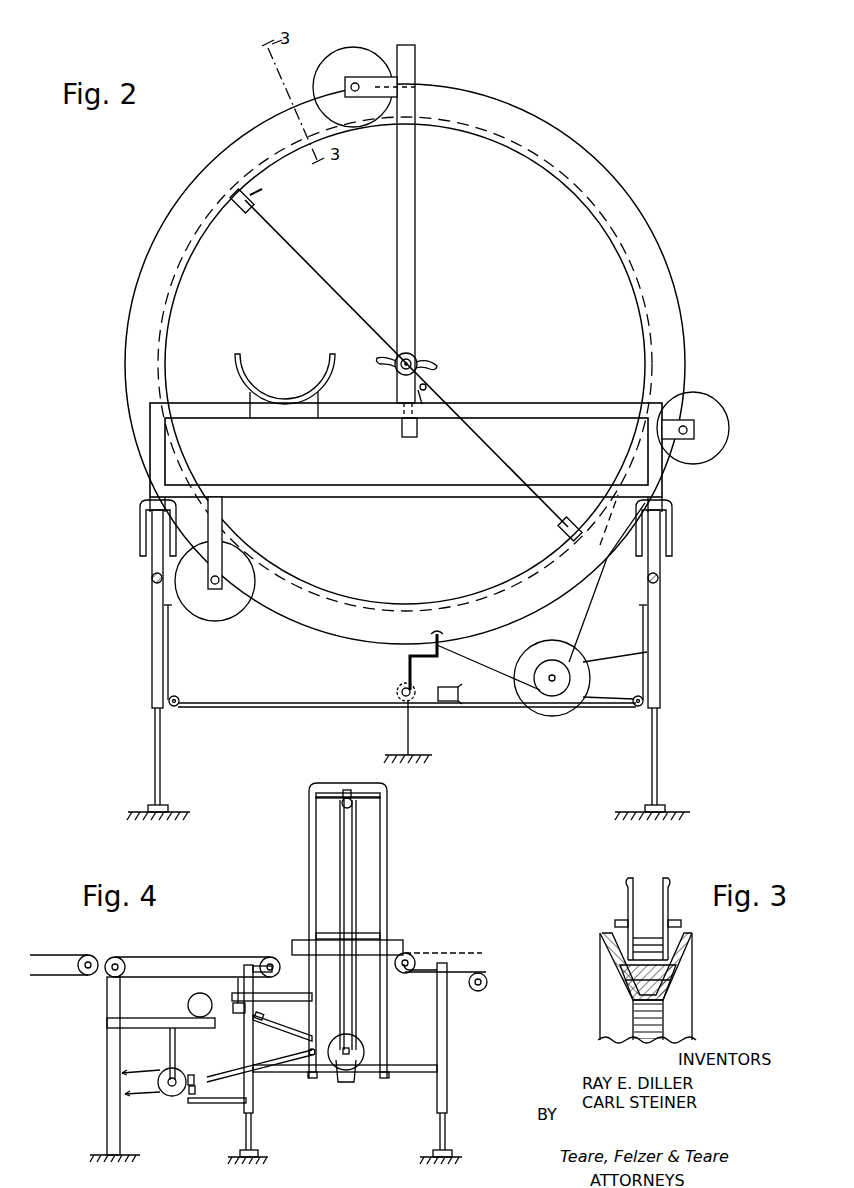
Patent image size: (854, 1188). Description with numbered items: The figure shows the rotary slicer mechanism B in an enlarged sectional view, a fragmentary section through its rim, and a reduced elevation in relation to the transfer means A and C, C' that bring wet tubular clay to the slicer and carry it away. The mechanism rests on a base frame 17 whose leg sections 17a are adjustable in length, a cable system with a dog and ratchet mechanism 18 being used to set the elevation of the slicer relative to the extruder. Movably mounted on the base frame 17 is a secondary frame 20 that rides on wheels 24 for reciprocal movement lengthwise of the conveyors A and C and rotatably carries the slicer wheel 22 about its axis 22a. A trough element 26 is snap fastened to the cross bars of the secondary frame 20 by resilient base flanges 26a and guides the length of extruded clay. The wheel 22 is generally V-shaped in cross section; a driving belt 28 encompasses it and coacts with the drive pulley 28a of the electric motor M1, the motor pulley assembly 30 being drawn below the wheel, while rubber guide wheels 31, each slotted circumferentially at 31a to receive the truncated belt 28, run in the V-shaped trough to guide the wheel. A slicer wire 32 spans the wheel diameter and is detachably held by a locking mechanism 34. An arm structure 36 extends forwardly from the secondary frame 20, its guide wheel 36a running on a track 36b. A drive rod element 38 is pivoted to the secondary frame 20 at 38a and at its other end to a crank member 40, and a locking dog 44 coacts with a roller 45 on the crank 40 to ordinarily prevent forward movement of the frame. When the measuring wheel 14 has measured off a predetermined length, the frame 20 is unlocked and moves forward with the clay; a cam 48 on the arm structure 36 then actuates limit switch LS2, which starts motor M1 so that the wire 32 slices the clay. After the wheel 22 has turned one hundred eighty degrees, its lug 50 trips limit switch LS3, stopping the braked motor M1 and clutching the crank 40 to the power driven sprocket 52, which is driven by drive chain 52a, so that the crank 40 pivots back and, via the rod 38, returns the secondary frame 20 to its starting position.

In FIG. 4, the measuring wheel 14 is at (488, 981).
In FIG. 2, the base frame 17 is at (152, 640).
In FIG. 4, the base frame 17 is at (448, 1072).
In FIG. 2, the leg section 17a is at (160, 772).
In FIG. 4, the leg section 17a is at (246, 1125).
In FIG. 2, the dog and ratchet mechanism 18 is at (400, 690).
In FIG. 2, the secondary frame 20 is at (228, 420).
In FIG. 4, the secondary frame 20 is at (388, 1034).
In FIG. 2, the slicer wheel 22 is at (566, 142).
In FIG. 3, the slicer wheel 22 is at (693, 1012).
In FIG. 2, the axis 22a is at (398, 370).
In FIG. 4, the axis 22a is at (370, 935).
In FIG. 2, the wheels 24 is at (152, 577).
In FIG. 4, the wheels 24 is at (340, 1062).
In FIG. 2, the trough element 26 is at (238, 380).
In FIG. 4, the trough element 26 is at (396, 940).
In FIG. 2, the resilient base flanges 26a is at (298, 410).
In FIG. 2, the driving belt 28 is at (480, 672).
In FIG. 3, the driving belt 28 is at (665, 980).
In FIG. 2, the drive pulley 28a is at (546, 690).
In FIG. 2, the motor pulley 30 is at (560, 712).
In FIG. 2, the guide wheels 31 is at (362, 52).
In FIG. 3, the guide wheels 31 is at (670, 900).
In FIG. 4, the guide wheels 31 is at (350, 1003).
In FIG. 3, the circumferential slot 31a is at (630, 884).
In FIG. 2, the slicer wire 32 is at (487, 452).
In FIG. 2, the locking mechanism 34 is at (212, 188).
In FIG. 4, the arm structure 36 is at (280, 993).
In FIG. 4, the guide wheel 36a is at (188, 1002).
In FIG. 4, the track 36b is at (155, 1028).
In FIG. 4, the drive rod element 38 is at (262, 1065).
In FIG. 4, the pivot 38a is at (310, 1056).
In FIG. 4, the crank member 40 is at (190, 1075).
In FIG. 4, the locking dog 44 is at (197, 1090).
In FIG. 4, the roller 45 is at (194, 1078).
In FIG. 4, the cam 48 is at (264, 1020).
In FIG. 2, the lug 50 is at (434, 360).
In FIG. 4, the power driven sprocket 52 is at (172, 1096).
In FIG. 4, the drive chain 52a is at (140, 1094).
In FIG. 4, the limit switch LS2 is at (235, 1000).
In FIG. 2, the limit switch LS3 is at (418, 437).
In FIG. 2, the drive motor M1 is at (578, 698).
In FIG. 4, the transfer mechanism A is at (450, 953).
In FIG. 4, the rotary slicer mechanism B is at (388, 850).
In FIG. 4, the transfer mechanism C is at (185, 1043).
In FIG. 4, the transfer mechanism C' is at (64, 948).